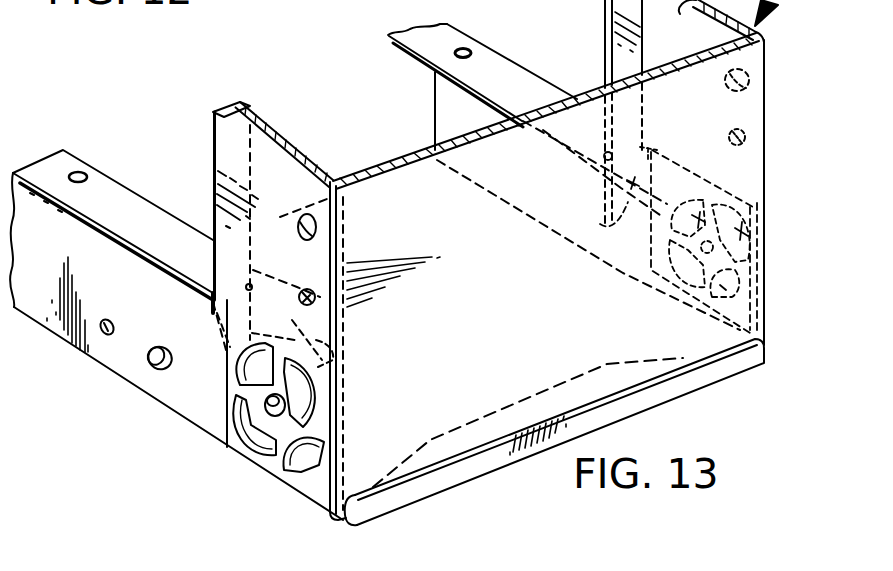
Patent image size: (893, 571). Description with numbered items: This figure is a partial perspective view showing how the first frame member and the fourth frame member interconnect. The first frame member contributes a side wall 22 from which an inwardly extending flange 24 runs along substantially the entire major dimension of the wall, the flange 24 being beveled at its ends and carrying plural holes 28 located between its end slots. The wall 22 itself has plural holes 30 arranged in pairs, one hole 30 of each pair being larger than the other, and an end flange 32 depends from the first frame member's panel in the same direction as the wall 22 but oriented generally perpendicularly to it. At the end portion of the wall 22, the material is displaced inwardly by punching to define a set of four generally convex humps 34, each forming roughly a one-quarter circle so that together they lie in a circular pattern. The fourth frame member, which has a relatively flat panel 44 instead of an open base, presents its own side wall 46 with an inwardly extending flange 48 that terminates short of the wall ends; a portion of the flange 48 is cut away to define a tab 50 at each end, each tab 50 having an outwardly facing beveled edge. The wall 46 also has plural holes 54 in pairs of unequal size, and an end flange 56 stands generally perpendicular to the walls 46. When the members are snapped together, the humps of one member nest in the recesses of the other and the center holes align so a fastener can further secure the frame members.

The side wall 22 is at (38, 283).
The inwardly extending flange 24 is at (44, 167).
The holes 28 is at (84, 177).
The holes 30 is at (109, 335).
The end flange 32 is at (682, 386).
The humps 34 is at (765, 237).
The flat panel 44 is at (364, 448).
The side wall 46 is at (227, 142).
The inwardly extending flange 48 is at (245, 114).
The tab 50 is at (613, 215).
The holes 54 is at (306, 288).
The end flange 56 is at (537, 392).